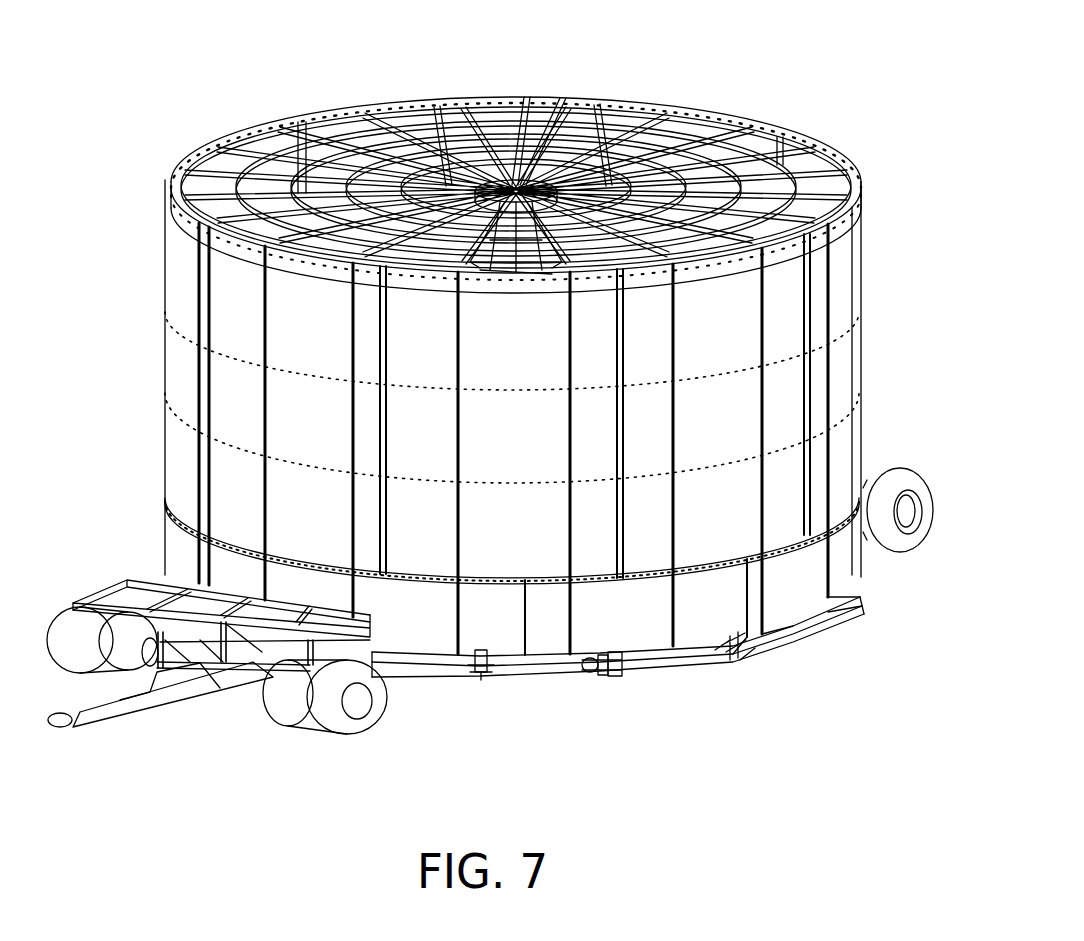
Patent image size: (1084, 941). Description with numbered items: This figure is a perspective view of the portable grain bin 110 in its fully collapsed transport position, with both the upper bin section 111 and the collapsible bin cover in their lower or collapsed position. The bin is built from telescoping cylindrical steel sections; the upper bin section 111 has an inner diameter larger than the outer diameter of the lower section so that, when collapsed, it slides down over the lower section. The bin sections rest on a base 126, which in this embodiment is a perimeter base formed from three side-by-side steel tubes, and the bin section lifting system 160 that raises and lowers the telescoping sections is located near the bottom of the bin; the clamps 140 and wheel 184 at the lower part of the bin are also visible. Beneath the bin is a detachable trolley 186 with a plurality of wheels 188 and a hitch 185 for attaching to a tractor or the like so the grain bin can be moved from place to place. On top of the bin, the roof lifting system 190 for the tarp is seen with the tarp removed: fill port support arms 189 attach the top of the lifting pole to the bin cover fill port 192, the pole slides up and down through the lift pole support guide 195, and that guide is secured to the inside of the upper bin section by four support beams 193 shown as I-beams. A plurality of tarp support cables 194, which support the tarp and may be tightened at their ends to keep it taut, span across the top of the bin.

The portable grain bin 110 is at (868, 277).
The upper bin section 111 is at (843, 363).
The base 126 is at (783, 643).
The clamp 140 is at (484, 678).
The bin section lifting system 160 is at (609, 675).
The wheel 184 is at (917, 470).
The hitch 185 is at (117, 710).
The detachable trolley 186 is at (262, 690).
The wheels 188 is at (283, 707).
The fill port support arms 189 is at (530, 232).
The roof lifting system 190 is at (544, 224).
The bin cover fill port 192 is at (517, 178).
The support beams 193 is at (278, 207).
The tarp support cables 194 is at (353, 143).
The lift pole support guide 195 is at (720, 227).